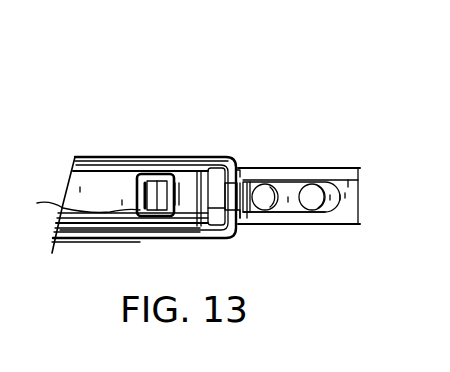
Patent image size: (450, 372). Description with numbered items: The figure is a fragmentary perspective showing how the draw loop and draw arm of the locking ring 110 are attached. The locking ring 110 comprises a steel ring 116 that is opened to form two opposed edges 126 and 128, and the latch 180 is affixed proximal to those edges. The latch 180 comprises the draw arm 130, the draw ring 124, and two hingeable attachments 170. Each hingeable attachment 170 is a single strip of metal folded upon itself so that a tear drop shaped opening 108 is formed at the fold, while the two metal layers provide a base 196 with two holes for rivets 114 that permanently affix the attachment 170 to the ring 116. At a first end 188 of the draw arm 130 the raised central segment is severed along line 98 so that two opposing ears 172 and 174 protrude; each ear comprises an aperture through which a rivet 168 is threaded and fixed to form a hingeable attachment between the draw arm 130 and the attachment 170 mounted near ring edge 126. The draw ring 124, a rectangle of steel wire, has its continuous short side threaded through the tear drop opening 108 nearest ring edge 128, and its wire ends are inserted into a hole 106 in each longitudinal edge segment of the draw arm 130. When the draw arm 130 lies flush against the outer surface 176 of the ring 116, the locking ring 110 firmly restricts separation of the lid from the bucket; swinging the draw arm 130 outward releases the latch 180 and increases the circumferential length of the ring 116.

The severing line 98 is at (73, 203).
The hole 106 is at (0, 44).
The tear drop shaped opening 108 is at (185, 165).
The locking ring 110 is at (298, 224).
The rivets 114 is at (310, 183).
The steel ring 116 is at (357, 168).
The draw ring 124 is at (199, 165).
The ring edge 126 is at (196, 228).
The ring edge 128 is at (201, 238).
The draw arm 130 is at (100, 188).
The rivet 168 is at (159, 174).
The hingeable attachment 170 is at (134, 191).
The ear 172 is at (148, 177).
The ear 174 is at (130, 244).
The outer surface 176 is at (343, 168).
The latch 180 is at (73, 242).
The first end 188 is at (168, 174).
The base 196 is at (347, 225).